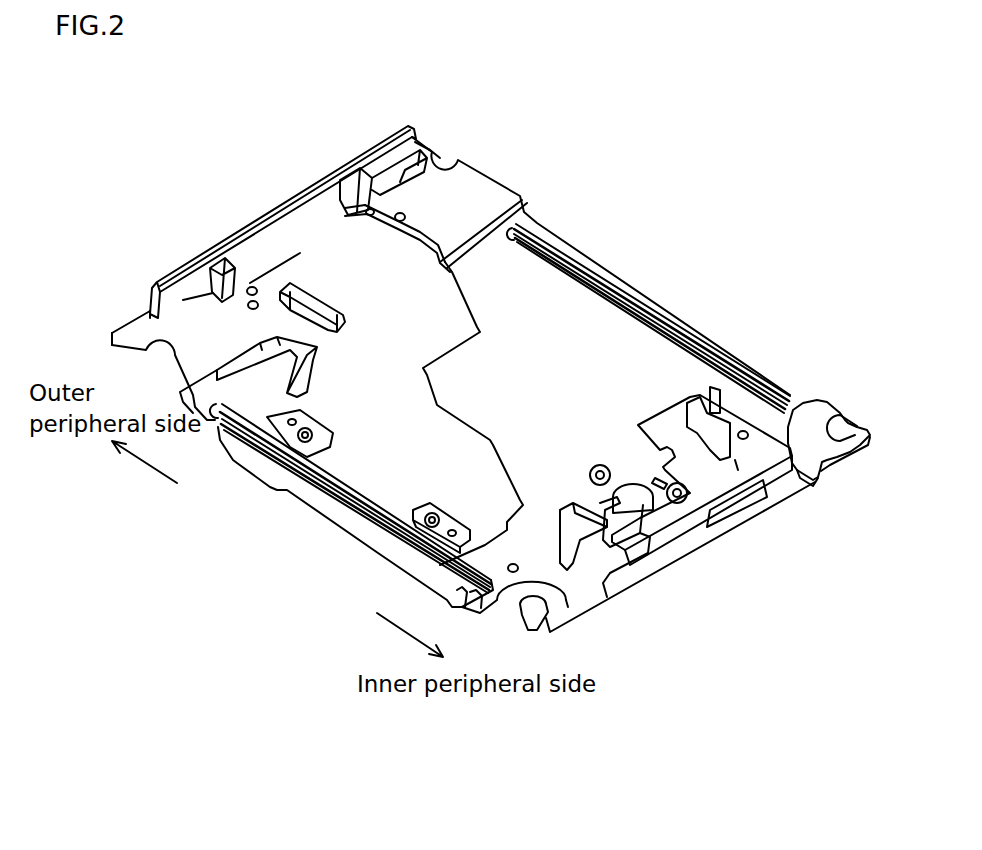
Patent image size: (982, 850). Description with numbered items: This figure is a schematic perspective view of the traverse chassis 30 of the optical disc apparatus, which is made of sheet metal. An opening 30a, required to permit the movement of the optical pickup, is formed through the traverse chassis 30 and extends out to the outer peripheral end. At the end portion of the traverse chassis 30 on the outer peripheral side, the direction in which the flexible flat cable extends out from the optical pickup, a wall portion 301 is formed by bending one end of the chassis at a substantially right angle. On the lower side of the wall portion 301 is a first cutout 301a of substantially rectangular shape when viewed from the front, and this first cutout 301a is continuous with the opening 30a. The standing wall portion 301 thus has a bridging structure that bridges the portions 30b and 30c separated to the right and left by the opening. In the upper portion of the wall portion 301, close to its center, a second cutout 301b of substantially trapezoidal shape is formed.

The traverse chassis 30 is at (491, 384).
The opening 30a is at (383, 418).
The portion 30b is at (243, 277).
The portion 30c is at (363, 207).
The wall portion 301 is at (188, 262).
The first cutout 301a is at (280, 240).
The second cutout 301b is at (293, 203).